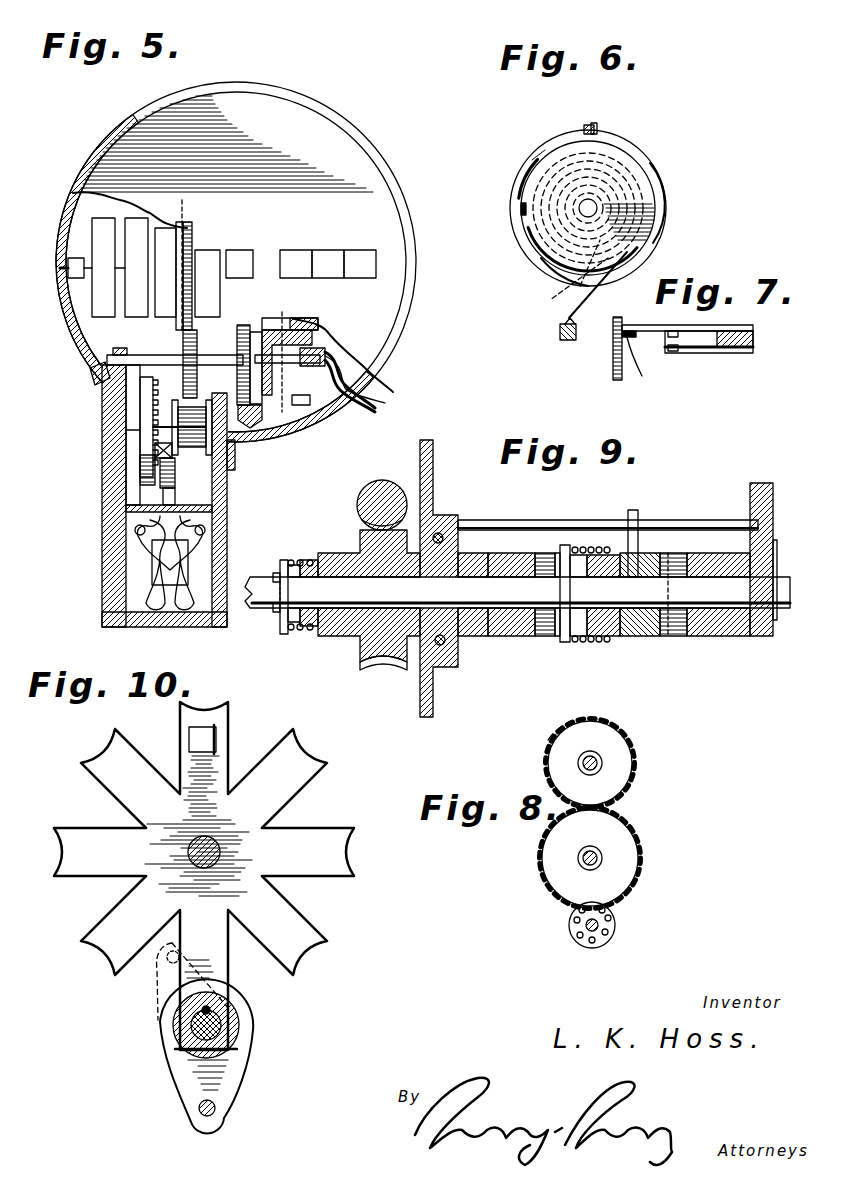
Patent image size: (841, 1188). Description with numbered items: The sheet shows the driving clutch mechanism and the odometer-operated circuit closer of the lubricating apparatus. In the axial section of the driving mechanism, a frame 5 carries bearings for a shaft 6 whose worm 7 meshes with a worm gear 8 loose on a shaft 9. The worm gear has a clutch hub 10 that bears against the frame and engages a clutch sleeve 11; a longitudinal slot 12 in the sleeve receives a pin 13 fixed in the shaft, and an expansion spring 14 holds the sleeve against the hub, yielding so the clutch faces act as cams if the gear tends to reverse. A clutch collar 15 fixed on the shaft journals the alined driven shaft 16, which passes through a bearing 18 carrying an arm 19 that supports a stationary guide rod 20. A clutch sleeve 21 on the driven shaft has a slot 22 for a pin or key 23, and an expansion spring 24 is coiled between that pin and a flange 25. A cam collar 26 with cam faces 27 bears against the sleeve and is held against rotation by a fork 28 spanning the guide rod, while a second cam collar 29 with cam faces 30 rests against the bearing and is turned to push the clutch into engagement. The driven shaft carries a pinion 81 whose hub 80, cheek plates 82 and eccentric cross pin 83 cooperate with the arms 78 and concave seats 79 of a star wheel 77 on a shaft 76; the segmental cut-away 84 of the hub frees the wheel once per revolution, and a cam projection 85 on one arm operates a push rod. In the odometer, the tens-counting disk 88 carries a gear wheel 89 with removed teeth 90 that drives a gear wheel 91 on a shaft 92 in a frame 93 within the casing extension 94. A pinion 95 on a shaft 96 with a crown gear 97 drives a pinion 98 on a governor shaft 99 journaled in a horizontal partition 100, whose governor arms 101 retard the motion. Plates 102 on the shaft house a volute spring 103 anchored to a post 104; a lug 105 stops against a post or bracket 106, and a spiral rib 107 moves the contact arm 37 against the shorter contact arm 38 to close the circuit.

In FIG. 9, the frame 5 is at (433, 488).
In FIG. 5, the shaft 6 is at (285, 301).
In FIG. 9, the worm 7 is at (372, 504).
In FIG. 5, the worm gear 8 is at (183, 208).
In FIG. 9, the worm gear 8 is at (385, 657).
In FIG. 9, the shaft 9 is at (262, 604).
In FIG. 9, the clutch hub 10 is at (350, 636).
In FIG. 9, the clutch sleeve 11 is at (315, 636).
In FIG. 9, the longitudinal slot 12 is at (282, 575).
In FIG. 9, the pin 13 is at (278, 634).
In FIG. 9, the expansion spring 14 is at (300, 560).
In FIG. 9, the clutch collar 15 is at (477, 636).
In FIG. 9, the driven shaft 16 is at (700, 636).
In FIG. 10, the driven shaft 16 is at (239, 1022).
In FIG. 9, the bearing 18 is at (765, 636).
In FIG. 9, the arm 19 is at (752, 498).
In FIG. 9, the guide rod 20 is at (570, 520).
In FIG. 9, the clutch sleeve 21 is at (515, 636).
In FIG. 9, the longitudinal slot 22 is at (548, 636).
In FIG. 9, the pin or key 23 is at (558, 553).
In FIG. 9, the expansion spring 24 is at (597, 642).
In FIG. 9, the flange 25 is at (568, 548).
In FIG. 9, the cam collar 26 is at (650, 555).
In FIG. 9, the cam faces 27 is at (690, 556).
In FIG. 9, the fork 28 is at (636, 510).
In FIG. 9, the second cam collar 29 is at (722, 636).
In FIG. 9, the cam faces 30 is at (690, 556).
In FIG. 5, the contact arm 37 is at (276, 363).
In FIG. 6, the contact arm 37 is at (520, 200).
In FIG. 7, the contact arm 37 is at (692, 325).
In FIG. 5, the contact arm 38 is at (322, 355).
In FIG. 7, the contact arm 38 is at (703, 353).
In FIG. 10, the shaft 76 is at (220, 847).
In FIG. 10, the star wheel 77 is at (204, 876).
In FIG. 10, the arms 78 is at (294, 778).
In FIG. 10, the concave seats 79 is at (306, 955).
In FIG. 10, the hub 80 is at (238, 1042).
In FIG. 10, the pinion 81 is at (236, 1090).
In FIG. 10, the cheek plates 82 is at (193, 1083).
In FIG. 10, the cross pin 83 is at (215, 1114).
In FIG. 10, the segmental cut-away 84 is at (196, 1052).
In FIG. 10, the cam projection 85 is at (189, 738).
In FIG. 5, the tens-counting disk 88 is at (220, 256).
In FIG. 5, the gear wheel 89 is at (177, 300).
In FIG. 8, the gear wheel 89 is at (556, 747).
In FIG. 5, the removed teeth 90 is at (190, 243).
In FIG. 8, the removed teeth 90 is at (636, 765).
In FIG. 5, the gear wheel 91 is at (180, 338).
In FIG. 8, the gear wheel 91 is at (622, 852).
In FIG. 5, the shaft 92 is at (100, 374).
In FIG. 6, the shaft 92 is at (586, 210).
In FIG. 8, the shaft 92 is at (585, 862).
In FIG. 5, the frame 93 is at (104, 480).
In FIG. 5, the extension 94 is at (102, 560).
In FIG. 5, the pinion 95 is at (232, 462).
In FIG. 8, the pinion 95 is at (614, 922).
In FIG. 5, the shaft 96 is at (140, 428).
In FIG. 8, the shaft 96 is at (586, 928).
In FIG. 5, the crown gear 97 is at (134, 455).
In FIG. 5, the pinion 98 is at (172, 480).
In FIG. 5, the governor shaft 99 is at (128, 509).
In FIG. 5, the horizontal partition 100 is at (215, 503).
In FIG. 5, the governor arms 101 is at (180, 612).
In FIG. 5, the casing or plates 102 is at (237, 336).
In FIG. 6, the casing or plates 102 is at (655, 180).
In FIG. 7, the casing or plates 102 is at (616, 364).
In FIG. 5, the volute spring 103 is at (255, 332).
In FIG. 6, the volute spring 103 is at (521, 215).
In FIG. 5, the post 104 is at (258, 428).
In FIG. 6, the post 104 is at (560, 334).
In FIG. 5, the projection or lug 105 is at (272, 330).
In FIG. 6, the projection or lug 105 is at (584, 126).
In FIG. 5, the post or bracket 106 is at (306, 318).
In FIG. 6, the post or bracket 106 is at (597, 126).
In FIG. 7, the post or bracket 106 is at (755, 336).
In FIG. 5, the spiral rib 107 is at (298, 408).
In FIG. 6, the spiral rib 107 is at (656, 208).
In FIG. 7, the spiral rib 107 is at (645, 378).